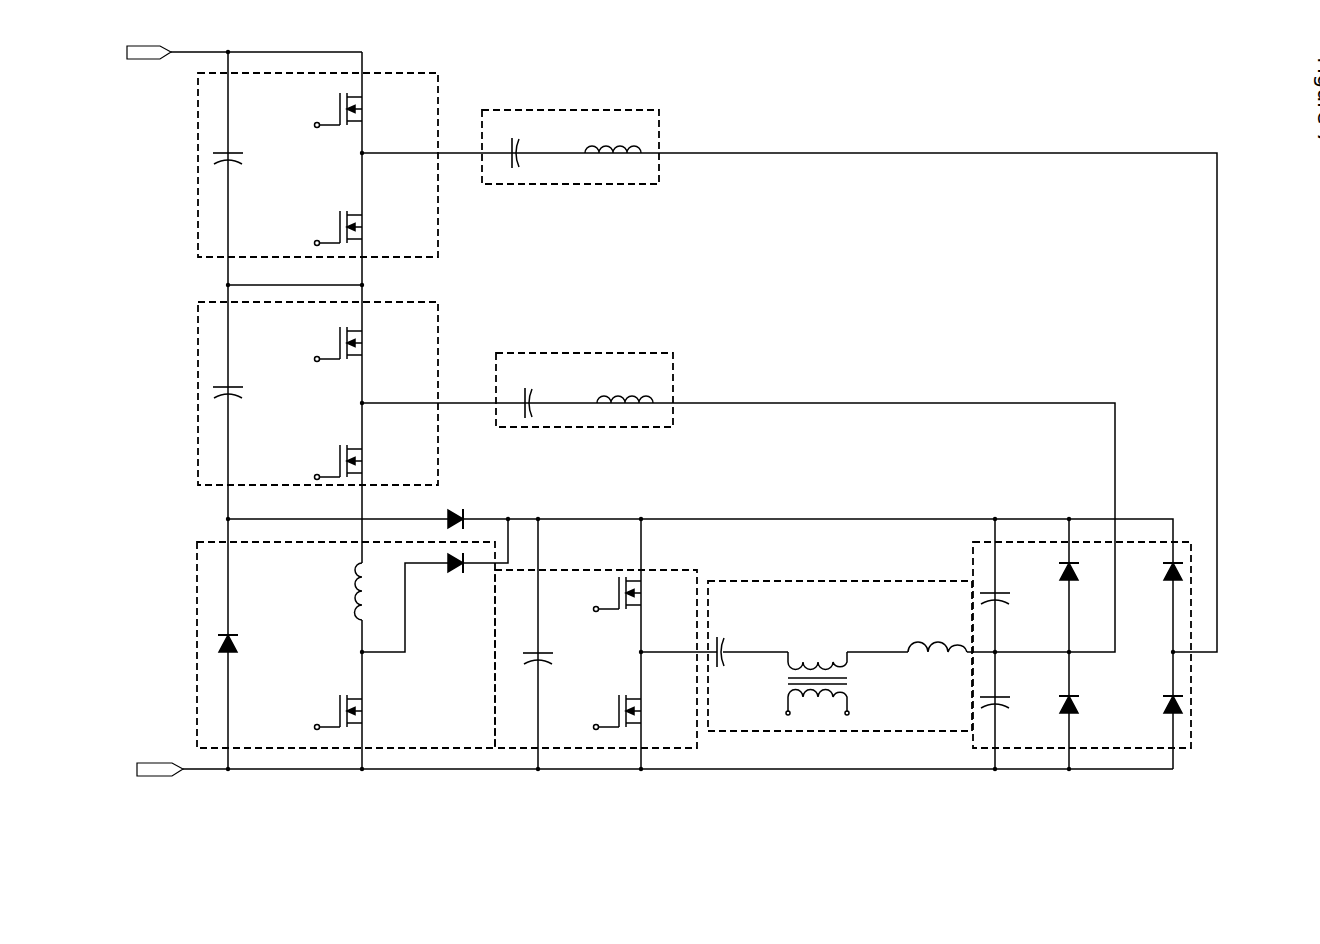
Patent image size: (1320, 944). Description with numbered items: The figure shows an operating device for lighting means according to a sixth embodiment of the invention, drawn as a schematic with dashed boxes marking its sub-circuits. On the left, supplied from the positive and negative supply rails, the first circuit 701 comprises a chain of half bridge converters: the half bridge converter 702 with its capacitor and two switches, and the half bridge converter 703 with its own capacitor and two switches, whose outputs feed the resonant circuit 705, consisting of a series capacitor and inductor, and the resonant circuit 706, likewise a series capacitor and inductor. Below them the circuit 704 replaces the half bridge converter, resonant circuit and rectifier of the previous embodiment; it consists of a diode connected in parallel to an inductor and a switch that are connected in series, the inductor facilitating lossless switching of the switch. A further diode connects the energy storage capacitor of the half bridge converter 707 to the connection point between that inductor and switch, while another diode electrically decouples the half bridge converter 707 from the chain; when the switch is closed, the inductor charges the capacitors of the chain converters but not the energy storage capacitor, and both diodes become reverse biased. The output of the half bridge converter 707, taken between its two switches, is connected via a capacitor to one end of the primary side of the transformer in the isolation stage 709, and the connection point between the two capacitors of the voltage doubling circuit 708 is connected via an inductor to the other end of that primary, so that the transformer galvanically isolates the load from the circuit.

The power converter circuit 701 is at (643, 427).
The first half-bridge inverter stage (C1, Q1, Q2) 702 is at (285, 165).
The second half-bridge inverter stage (C3, Q3, Q4) 703 is at (285, 393).
The circuit 704 is at (313, 645).
The first resonant tank (C2, L1) 705 is at (570, 130).
The second resonant tank (C4, L2) 706 is at (584, 374).
The energy storage and output half-bridge (C5, Q5, Q6) 707 is at (557, 689).
The rectifier and output filter (D1-D4, C7, C8) 708 is at (1093, 675).
The isolation stage with transformer T1 (C6, T1, L3) 709 is at (840, 695).